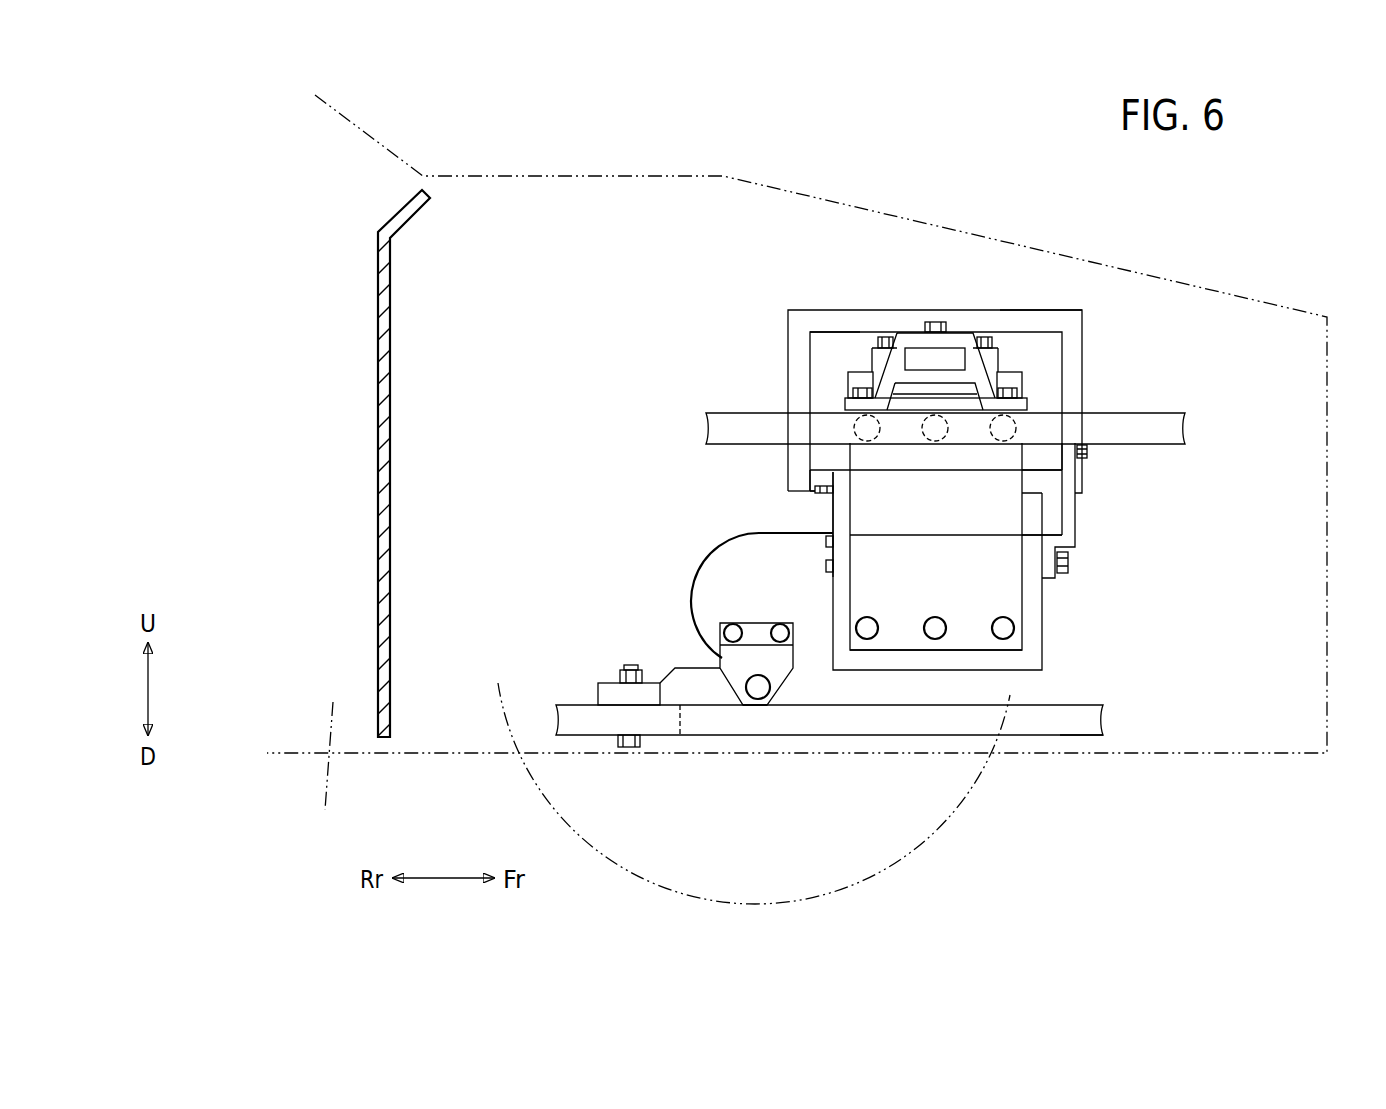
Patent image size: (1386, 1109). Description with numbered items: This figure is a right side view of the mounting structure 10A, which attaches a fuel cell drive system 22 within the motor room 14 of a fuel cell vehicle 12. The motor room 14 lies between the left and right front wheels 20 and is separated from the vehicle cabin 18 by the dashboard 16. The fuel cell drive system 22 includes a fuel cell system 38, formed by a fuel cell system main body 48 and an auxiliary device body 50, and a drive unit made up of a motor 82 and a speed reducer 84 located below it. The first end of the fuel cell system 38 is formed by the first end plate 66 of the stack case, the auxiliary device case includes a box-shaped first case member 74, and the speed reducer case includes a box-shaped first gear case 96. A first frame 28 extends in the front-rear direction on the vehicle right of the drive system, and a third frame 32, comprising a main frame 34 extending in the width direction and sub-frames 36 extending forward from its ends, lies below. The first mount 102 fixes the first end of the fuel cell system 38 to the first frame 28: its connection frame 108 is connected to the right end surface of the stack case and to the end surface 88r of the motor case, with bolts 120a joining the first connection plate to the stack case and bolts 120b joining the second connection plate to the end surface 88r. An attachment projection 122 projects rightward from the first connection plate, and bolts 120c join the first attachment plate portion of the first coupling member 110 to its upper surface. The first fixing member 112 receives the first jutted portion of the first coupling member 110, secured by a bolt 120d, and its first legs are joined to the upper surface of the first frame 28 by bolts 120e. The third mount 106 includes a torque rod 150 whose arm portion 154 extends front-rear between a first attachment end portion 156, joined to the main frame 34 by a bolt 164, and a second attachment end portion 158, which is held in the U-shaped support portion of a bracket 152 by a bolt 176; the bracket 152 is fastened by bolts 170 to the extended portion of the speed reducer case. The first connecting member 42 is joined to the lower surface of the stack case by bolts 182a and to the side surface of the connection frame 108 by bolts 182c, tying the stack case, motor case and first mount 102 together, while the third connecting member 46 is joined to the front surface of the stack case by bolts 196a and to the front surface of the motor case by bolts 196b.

The mounting structure 10A is at (883, 478).
The vehicle 12 is at (1183, 280).
The motor room 14 is at (418, 620).
The dashboard 16 is at (373, 478).
The vehicle cabin 18 is at (322, 773).
The front wheels 20 is at (962, 815).
The fuel cell drive system 22 is at (874, 372).
The first frame 28 is at (718, 427).
The third frame 32 is at (780, 717).
The main frame 34 is at (587, 720).
The sub-frames 36 is at (1068, 720).
The fuel cell system 38 is at (862, 415).
The first connecting member 42 is at (765, 521).
The third connecting member 46 is at (1108, 514).
The fuel cell system main body 48 is at (810, 352).
The auxiliary device body 50 is at (788, 323).
The first end plate 66 is at (827, 330).
The first case member 74 is at (1044, 310).
The motor 82 is at (1002, 558).
The speed reducer 84 is at (699, 580).
The end surface of the motor case 88r is at (1037, 647).
The first gear case 96 is at (690, 575).
The first mount 102 is at (952, 296).
The third mount 106 is at (683, 790).
The connection frame 108 is at (1015, 513).
The first coupling member 110 is at (968, 352).
The first fixing member 112 is at (977, 365).
The bolts 120a is at (1000, 442).
The bolts 120b is at (1000, 625).
The bolts 120c is at (983, 337).
The bolt 120d is at (935, 322).
The bolts 120e is at (1012, 387).
The attachment projection 122 is at (862, 378).
The torque rod 150 is at (714, 684).
The bracket 152 is at (791, 684).
The arm portion 154 is at (687, 685).
The first attachment end portion 156 is at (610, 690).
The second attachment end portion 158 is at (788, 692).
The bolt 164 is at (630, 747).
The bolts 170 is at (779, 622).
The bolt 176 is at (758, 699).
The bolts 182a is at (818, 500).
The bolts 182c is at (826, 564).
The bolts 196a is at (1088, 452).
The bolts 196b is at (1069, 563).